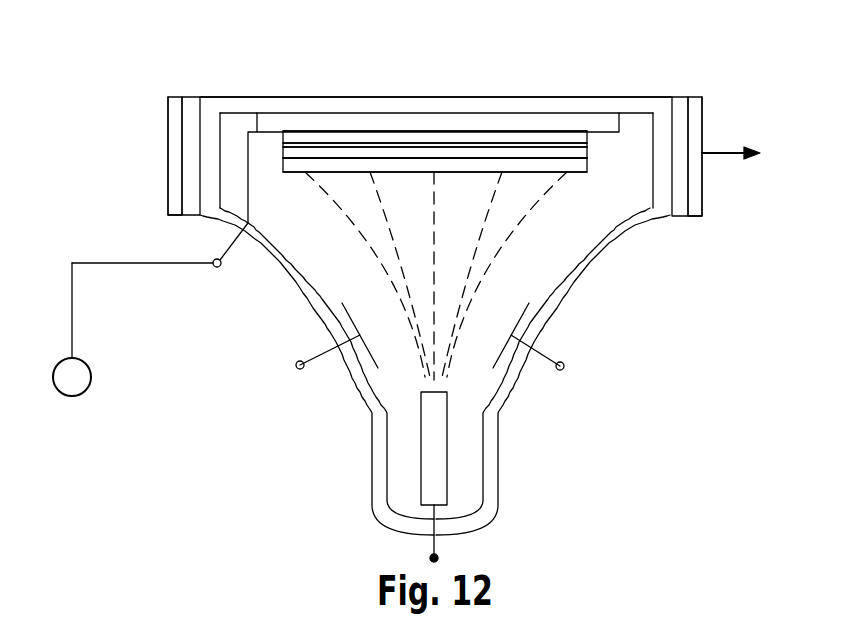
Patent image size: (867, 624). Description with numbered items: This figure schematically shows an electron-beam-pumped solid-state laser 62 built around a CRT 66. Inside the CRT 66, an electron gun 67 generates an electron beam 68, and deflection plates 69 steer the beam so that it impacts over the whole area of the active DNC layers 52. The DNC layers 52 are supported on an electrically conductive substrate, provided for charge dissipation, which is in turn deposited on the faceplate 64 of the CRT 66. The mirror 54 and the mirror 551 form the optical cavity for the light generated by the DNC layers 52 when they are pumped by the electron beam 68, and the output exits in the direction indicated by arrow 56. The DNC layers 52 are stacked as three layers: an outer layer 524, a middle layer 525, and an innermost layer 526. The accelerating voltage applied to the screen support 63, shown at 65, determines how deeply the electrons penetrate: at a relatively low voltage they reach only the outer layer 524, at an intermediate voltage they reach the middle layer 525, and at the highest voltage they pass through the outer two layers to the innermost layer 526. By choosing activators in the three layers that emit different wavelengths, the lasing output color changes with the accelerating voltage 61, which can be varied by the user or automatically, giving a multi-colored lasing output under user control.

The active DNC layers 52 is at (620, 158).
The outer DNC layer 524 is at (295, 147).
The middle DNC layer 525 is at (327, 147).
The innermost DNC layer 526 is at (365, 137).
The mirror 54 is at (693, 198).
The mirror 551 is at (175, 182).
The direction arrow 56 is at (718, 152).
The accelerating voltage 61 is at (78, 396).
The electron-beam-pumped solid-state laser 62 is at (697, 83).
The screen support 63 is at (610, 122).
The faceplate 64 is at (550, 107).
The accelerating voltage connection 65 is at (212, 270).
The CRT 66 is at (272, 283).
The electron gun 67 is at (447, 450).
The electron beam 68 is at (512, 237).
The deflection plates 69 is at (348, 329).